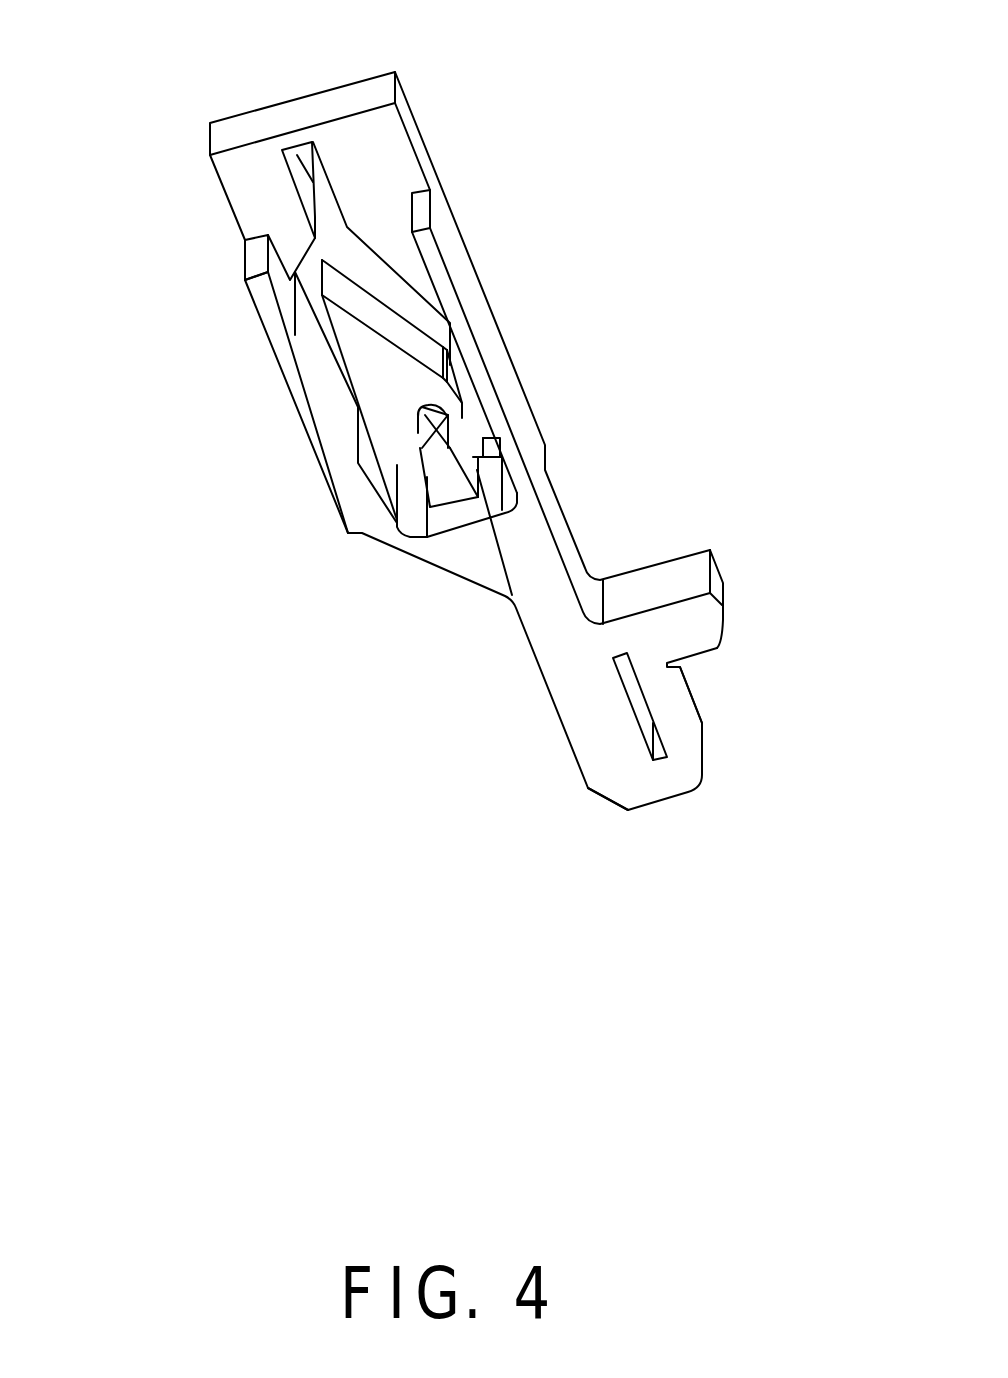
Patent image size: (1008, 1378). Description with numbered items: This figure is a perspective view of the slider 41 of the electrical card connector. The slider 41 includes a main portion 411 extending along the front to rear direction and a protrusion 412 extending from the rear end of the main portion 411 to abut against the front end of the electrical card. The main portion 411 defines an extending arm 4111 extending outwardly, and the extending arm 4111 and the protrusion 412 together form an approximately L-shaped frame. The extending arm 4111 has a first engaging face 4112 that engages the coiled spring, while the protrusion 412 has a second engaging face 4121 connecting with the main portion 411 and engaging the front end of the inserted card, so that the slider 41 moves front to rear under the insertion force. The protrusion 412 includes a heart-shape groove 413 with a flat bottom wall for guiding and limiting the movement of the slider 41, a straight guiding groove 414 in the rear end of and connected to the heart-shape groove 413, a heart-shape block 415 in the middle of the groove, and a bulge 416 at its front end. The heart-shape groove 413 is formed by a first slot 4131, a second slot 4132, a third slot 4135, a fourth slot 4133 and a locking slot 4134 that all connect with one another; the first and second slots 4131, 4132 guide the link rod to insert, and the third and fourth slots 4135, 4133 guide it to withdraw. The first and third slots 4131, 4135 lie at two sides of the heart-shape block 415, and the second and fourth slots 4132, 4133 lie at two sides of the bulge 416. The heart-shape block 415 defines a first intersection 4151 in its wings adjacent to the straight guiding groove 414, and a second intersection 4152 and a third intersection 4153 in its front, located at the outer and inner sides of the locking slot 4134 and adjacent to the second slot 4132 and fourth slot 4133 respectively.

The slider 41 is at (375, 148).
The main portion 411 is at (663, 780).
The extending arm 4111 is at (693, 634).
The first engaging face 4112 is at (668, 585).
The protrusion 412 is at (265, 182).
The second engaging face 4121 is at (453, 577).
The heart-shape groove 413 is at (368, 273).
The first slot 4131 is at (412, 312).
The second slot 4132 is at (483, 440).
The fourth slot 4133 is at (410, 466).
The locking slot 4134 is at (505, 477).
The third slot 4135 is at (330, 327).
The straight guiding groove 414 is at (313, 182).
The heart-shape block 415 is at (393, 385).
The first intersection 4151 is at (323, 268).
The second intersection 4152 is at (423, 415).
The third intersection 4153 is at (417, 445).
The bulge 416 is at (512, 597).